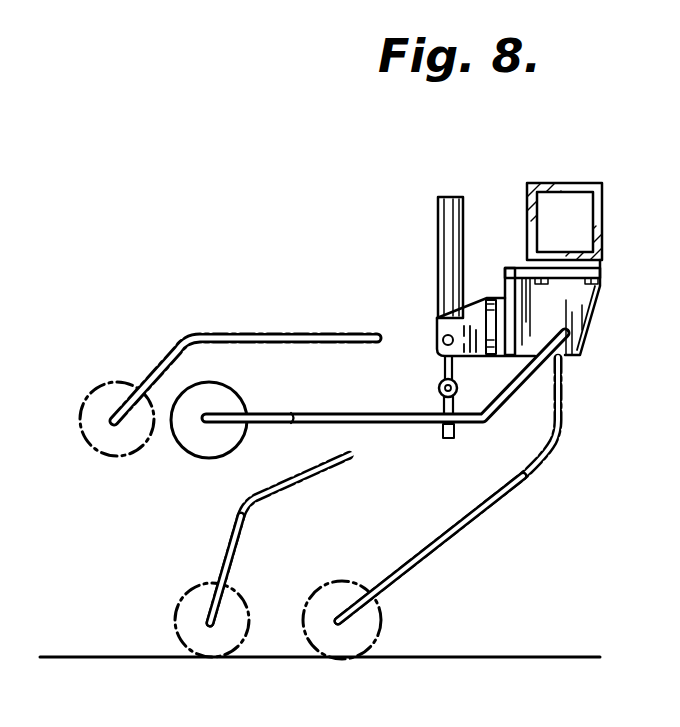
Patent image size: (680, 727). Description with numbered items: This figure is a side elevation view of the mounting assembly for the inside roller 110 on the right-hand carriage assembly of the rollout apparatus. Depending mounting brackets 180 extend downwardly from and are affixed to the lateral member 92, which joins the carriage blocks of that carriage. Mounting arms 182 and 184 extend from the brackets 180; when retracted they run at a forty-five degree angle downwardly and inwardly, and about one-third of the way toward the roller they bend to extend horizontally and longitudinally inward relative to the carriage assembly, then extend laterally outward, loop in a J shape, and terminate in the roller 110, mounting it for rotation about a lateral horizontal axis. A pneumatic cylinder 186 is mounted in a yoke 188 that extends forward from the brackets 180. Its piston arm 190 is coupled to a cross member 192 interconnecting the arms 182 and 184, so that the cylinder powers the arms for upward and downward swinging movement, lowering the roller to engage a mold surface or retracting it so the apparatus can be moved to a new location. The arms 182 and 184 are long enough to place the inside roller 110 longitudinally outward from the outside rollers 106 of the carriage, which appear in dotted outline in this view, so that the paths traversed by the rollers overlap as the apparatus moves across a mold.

The lateral member 92 is at (604, 202).
The outside roller 106 is at (101, 385).
The inside roller 110 is at (216, 397).
The mounting brackets 180 is at (598, 312).
The mounting arm 182 is at (388, 436).
The mounting arm 184 is at (522, 479).
The pneumatic cylinder 186 is at (438, 213).
The yoke 188 is at (474, 302).
The piston arm 190 is at (443, 366).
The cross member 192 is at (448, 434).